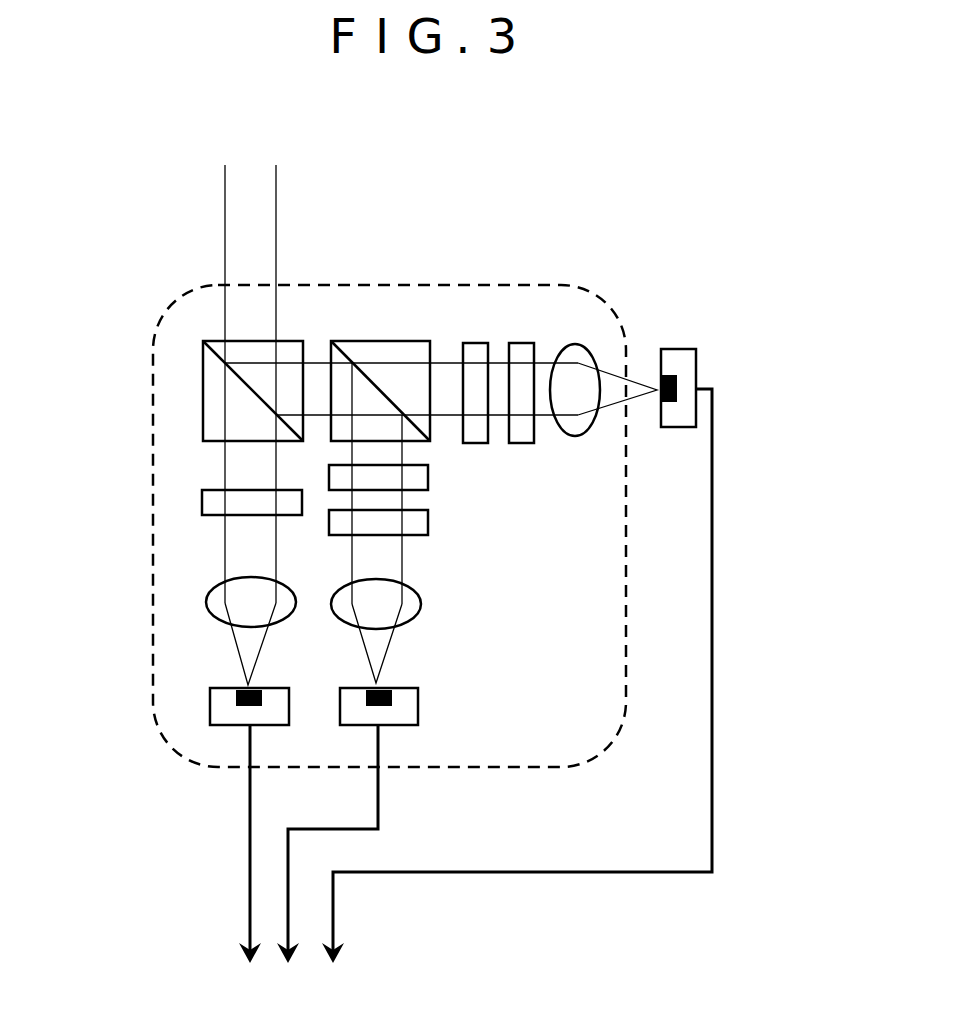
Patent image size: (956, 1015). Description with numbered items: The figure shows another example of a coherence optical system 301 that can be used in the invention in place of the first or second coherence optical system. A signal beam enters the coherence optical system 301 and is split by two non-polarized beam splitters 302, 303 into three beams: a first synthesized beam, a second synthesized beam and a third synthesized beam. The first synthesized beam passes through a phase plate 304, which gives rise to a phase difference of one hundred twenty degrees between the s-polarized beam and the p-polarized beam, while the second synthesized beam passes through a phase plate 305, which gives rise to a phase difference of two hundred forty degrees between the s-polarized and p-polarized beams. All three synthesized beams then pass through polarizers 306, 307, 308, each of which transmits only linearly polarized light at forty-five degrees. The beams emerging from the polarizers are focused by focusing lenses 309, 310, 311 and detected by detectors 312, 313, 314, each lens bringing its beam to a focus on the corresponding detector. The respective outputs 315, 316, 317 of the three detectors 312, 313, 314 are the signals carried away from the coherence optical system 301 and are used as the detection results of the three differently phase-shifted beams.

The coherence optical system 301 is at (153, 672).
The non-polarized beam splitter 302 is at (203, 377).
The non-polarized beam splitter 303 is at (378, 341).
The phase plate 304 is at (478, 343).
The phase plate 305 is at (428, 479).
The polarizer 306 is at (527, 343).
The polarizer 307 is at (428, 519).
The polarizer 308 is at (203, 497).
The focusing lens 309 is at (585, 345).
The focusing lens 310 is at (421, 604).
The focusing lens 311 is at (206, 602).
The detector 312 is at (687, 349).
The detector 313 is at (418, 707).
The detector 314 is at (210, 707).
The output 315 is at (712, 449).
The output 316 is at (378, 795).
The output 317 is at (250, 803).